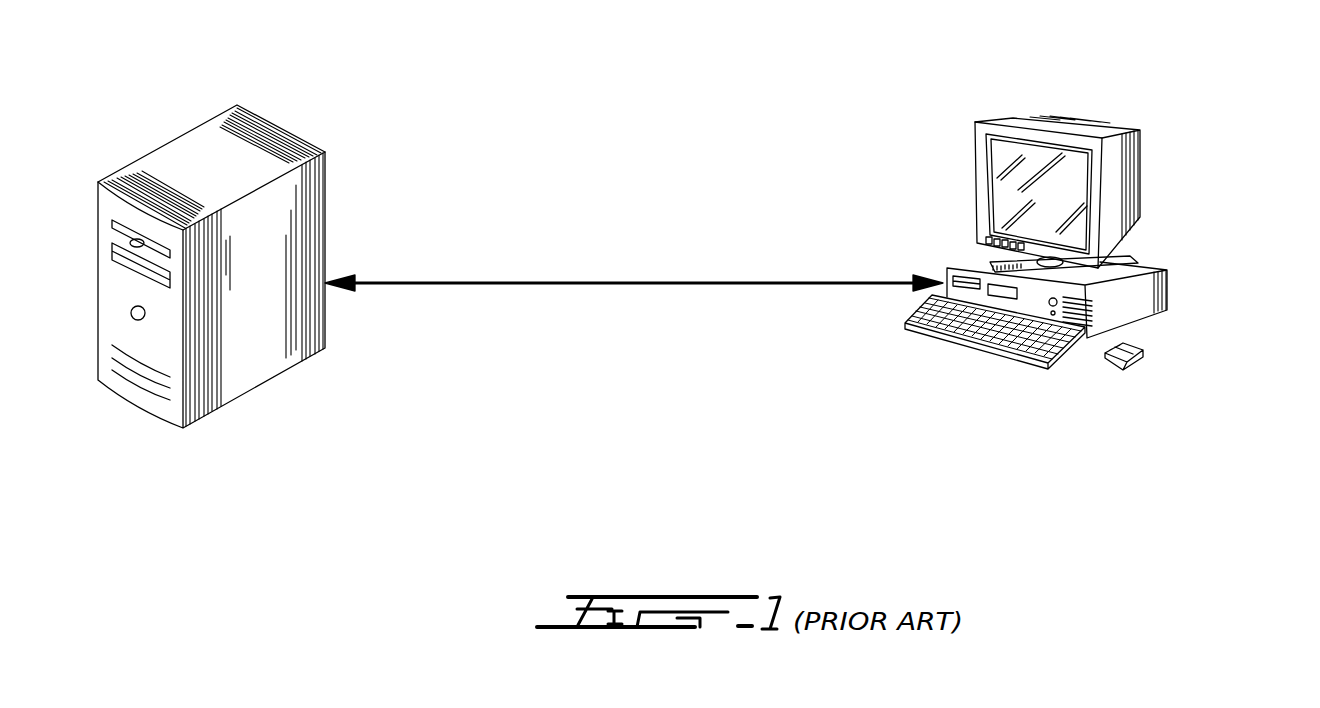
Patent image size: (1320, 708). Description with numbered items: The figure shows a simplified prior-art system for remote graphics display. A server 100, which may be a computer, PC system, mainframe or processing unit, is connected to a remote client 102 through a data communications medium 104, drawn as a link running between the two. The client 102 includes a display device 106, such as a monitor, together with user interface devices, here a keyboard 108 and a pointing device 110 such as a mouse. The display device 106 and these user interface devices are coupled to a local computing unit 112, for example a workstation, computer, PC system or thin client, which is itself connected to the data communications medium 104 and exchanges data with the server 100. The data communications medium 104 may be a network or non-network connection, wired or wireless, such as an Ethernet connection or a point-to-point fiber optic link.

The server 100 is at (280, 390).
The client 102 is at (1177, 170).
The data communications medium 104 is at (638, 285).
The display device 106 is at (1013, 178).
The keyboard 108 is at (972, 320).
The pointing device 110 is at (1143, 354).
The local computing unit 112 is at (1150, 291).